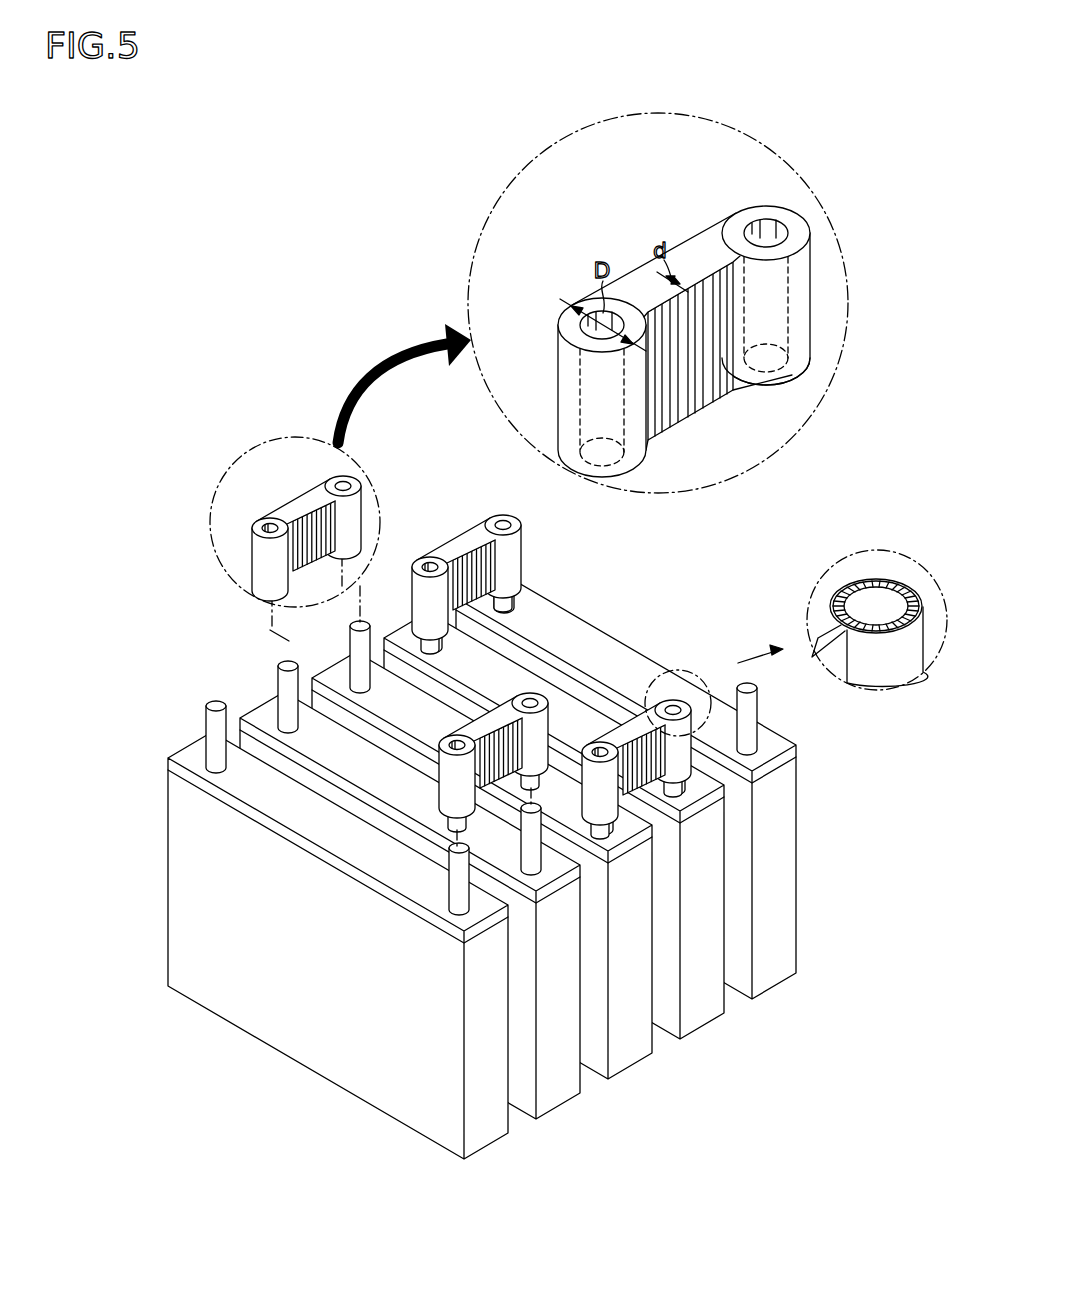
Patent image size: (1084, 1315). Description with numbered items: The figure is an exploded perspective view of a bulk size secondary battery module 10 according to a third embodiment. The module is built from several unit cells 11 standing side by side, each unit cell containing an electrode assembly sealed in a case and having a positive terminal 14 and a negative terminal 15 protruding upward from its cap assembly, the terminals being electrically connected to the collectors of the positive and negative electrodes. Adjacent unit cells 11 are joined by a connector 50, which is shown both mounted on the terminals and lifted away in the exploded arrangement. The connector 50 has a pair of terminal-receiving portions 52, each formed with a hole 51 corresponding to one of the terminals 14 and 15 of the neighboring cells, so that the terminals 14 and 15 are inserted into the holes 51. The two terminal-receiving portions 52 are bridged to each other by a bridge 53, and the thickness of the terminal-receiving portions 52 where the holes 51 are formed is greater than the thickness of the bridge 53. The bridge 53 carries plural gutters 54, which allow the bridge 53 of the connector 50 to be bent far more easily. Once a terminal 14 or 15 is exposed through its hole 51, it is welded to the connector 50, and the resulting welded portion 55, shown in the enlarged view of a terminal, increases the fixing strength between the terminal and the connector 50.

The secondary battery module 10 is at (447, 822).
The unit cell 11 is at (493, 1149).
The positive terminal 14 is at (219, 705).
The negative terminal 15 is at (289, 665).
The connector 50 is at (297, 508).
The hole 51 is at (683, 446).
The terminal-receiving portion 52 is at (776, 370).
The bridge 53 is at (686, 262).
The gutter 54 is at (694, 397).
The welded portion 55 is at (838, 596).